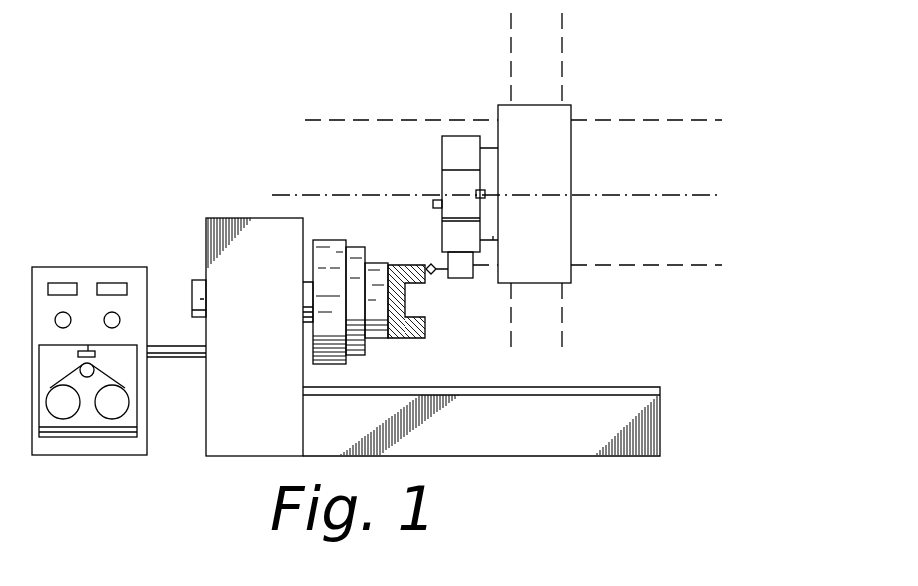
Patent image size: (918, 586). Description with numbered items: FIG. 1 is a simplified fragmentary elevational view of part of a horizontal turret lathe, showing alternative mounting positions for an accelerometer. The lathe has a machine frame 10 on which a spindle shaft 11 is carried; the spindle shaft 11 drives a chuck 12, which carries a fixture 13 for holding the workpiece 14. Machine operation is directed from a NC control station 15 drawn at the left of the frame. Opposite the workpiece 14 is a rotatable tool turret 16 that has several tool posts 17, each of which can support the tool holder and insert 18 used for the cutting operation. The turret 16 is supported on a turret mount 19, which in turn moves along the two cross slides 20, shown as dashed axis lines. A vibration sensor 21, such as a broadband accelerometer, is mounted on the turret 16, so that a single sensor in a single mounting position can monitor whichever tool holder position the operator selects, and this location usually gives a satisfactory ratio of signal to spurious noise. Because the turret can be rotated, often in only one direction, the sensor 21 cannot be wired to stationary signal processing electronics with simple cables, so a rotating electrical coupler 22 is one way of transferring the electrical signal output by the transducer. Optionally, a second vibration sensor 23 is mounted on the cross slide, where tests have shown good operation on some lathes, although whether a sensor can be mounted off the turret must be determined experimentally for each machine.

The machine frame 10 is at (660, 413).
The spindle shaft 11 is at (195, 280).
The chuck 12 is at (326, 240).
The fixture 13 is at (357, 247).
The workpiece 14 is at (410, 339).
The NC control station 15 is at (97, 272).
The rotatable tool turret 16 is at (458, 140).
The tool post 17 is at (462, 278).
The tool holder and insert 18 is at (430, 263).
The turret mount 19 is at (571, 173).
The cross slides 20 is at (562, 58).
The vibration sensor 21 is at (433, 203).
The rotating electrical coupler 22 is at (485, 193).
The vibration sensor 23 is at (493, 239).